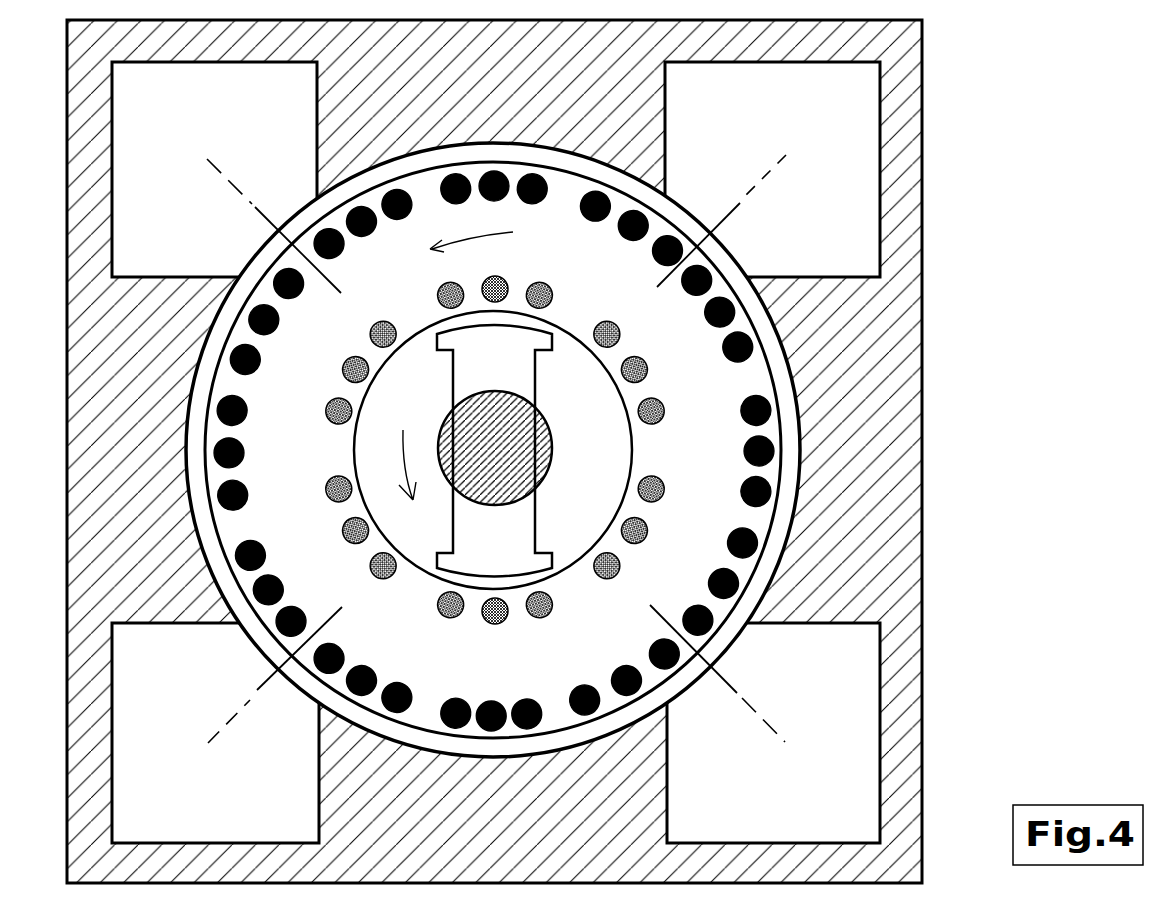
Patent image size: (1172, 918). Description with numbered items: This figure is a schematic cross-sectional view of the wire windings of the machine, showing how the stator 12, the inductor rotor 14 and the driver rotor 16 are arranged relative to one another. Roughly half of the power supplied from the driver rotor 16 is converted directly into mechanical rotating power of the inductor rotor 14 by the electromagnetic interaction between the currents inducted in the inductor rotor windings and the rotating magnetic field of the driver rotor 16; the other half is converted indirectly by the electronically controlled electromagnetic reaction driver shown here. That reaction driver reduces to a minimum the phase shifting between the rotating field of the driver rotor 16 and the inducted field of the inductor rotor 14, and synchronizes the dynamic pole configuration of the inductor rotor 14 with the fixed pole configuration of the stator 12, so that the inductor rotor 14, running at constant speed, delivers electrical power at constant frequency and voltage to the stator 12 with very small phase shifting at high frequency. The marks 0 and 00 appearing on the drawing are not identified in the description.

The stator 12 is at (686, 153).
The inductor rotor 14 is at (601, 277).
The driver rotor 16 is at (555, 386).
The quadrature axis 0 is at (498, 451).
The direct axis 00 is at (495, 453).